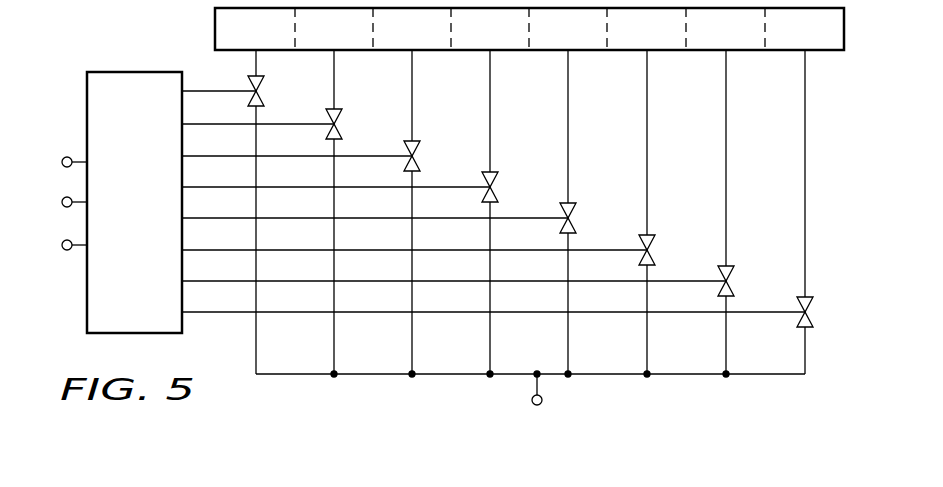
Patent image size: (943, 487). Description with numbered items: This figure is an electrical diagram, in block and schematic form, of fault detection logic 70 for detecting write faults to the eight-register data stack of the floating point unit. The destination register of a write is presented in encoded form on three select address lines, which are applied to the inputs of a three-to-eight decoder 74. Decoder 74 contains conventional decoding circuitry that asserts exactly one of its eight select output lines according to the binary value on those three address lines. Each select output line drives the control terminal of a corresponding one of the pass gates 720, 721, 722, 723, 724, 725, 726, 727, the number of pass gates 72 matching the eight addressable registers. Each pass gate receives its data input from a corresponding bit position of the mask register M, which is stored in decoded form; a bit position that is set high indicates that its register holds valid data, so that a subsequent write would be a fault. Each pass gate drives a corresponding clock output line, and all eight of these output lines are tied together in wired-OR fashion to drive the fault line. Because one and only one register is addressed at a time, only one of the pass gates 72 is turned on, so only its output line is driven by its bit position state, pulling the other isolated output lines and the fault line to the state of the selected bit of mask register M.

The fault detection logic 70 is at (127, 37).
The pass gates 72 is at (558, 199).
The pass gate 720 is at (261, 94).
The pass gate 721 is at (339, 127).
The pass gate 722 is at (417, 159).
The pass gate 723 is at (495, 190).
The pass gate 724 is at (573, 221).
The pass gate 725 is at (652, 253).
The pass gate 726 is at (731, 284).
The pass gate 727 is at (810, 315).
The 3:8 decoder 74 is at (148, 242).
The mask register M is at (838, 51).